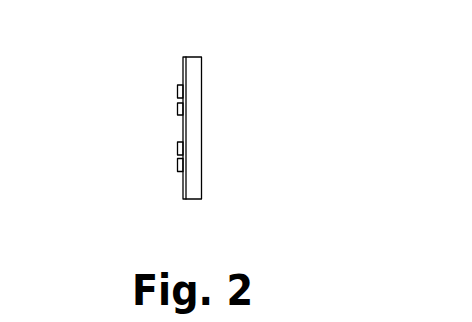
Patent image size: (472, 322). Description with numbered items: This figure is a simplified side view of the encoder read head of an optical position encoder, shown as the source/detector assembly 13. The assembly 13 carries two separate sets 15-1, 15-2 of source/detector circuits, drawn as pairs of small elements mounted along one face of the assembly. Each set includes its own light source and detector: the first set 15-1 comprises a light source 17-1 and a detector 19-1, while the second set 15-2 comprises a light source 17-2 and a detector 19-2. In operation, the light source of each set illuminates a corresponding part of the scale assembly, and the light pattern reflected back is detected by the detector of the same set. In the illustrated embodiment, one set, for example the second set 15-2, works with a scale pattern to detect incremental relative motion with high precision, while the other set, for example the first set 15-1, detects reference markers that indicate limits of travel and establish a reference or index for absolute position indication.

The source/detector assembly 13 is at (192, 57).
The first set of source/detector circuits 15-1 is at (199, 77).
The second set of source/detector circuits 15-2 is at (202, 182).
The light source 17-1 is at (183, 92).
The detector 19-1 is at (183, 107).
The light source 17-2 is at (183, 150).
The detector 19-2 is at (183, 166).